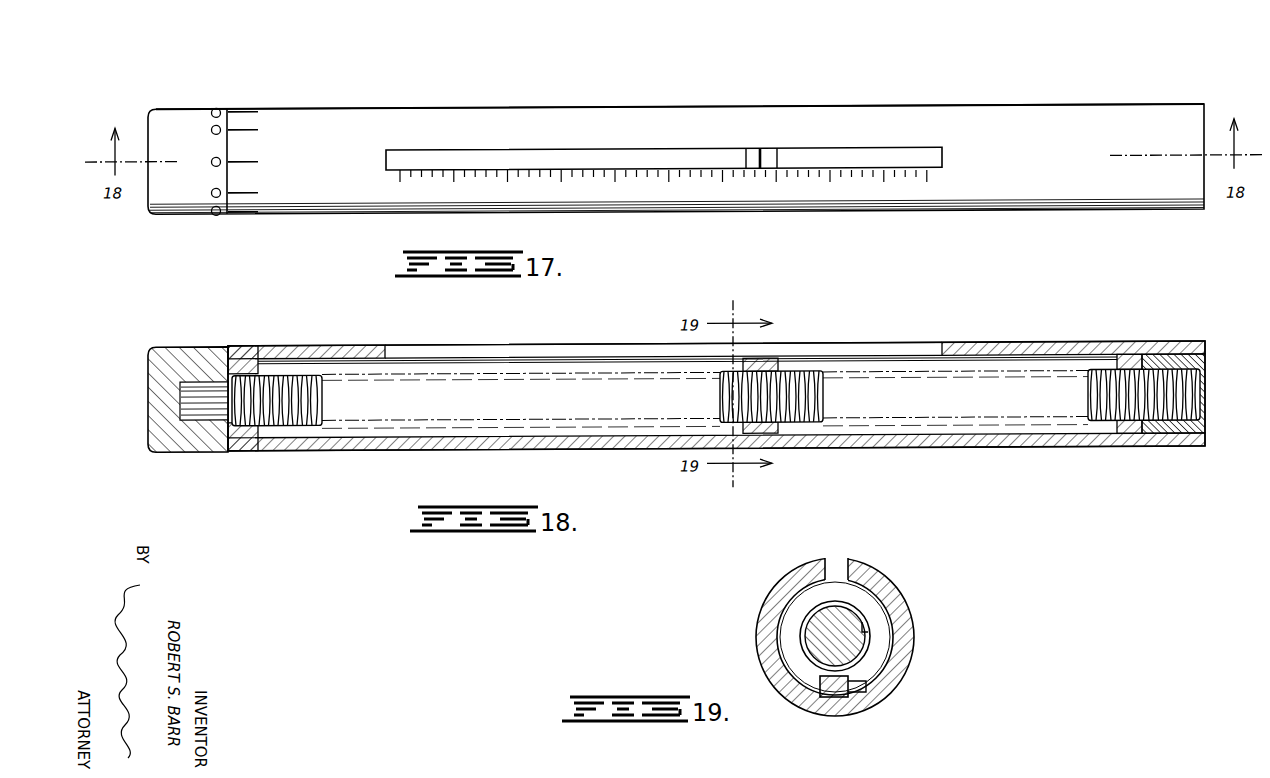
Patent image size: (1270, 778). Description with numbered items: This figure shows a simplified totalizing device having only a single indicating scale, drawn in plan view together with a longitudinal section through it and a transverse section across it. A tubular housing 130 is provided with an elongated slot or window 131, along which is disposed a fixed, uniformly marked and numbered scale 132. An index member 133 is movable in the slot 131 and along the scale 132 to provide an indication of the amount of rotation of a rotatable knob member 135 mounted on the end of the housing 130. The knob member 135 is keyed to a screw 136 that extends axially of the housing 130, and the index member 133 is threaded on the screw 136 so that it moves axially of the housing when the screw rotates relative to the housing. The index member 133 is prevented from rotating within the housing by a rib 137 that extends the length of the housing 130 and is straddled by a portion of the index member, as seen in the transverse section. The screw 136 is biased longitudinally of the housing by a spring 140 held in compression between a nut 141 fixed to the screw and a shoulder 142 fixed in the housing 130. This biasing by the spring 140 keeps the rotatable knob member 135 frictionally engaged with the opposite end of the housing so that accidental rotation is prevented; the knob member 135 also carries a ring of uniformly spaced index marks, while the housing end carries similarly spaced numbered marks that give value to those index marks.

In FIG. 17, the tubular housing 130 is at (582, 112).
In FIG. 18, the tubular housing 130 is at (1036, 348).
In FIG. 19, the tubular housing 130 is at (776, 589).
In FIG. 17, the elongated slot 131 is at (655, 156).
In FIG. 18, the elongated slot 131 is at (888, 356).
In FIG. 19, the elongated slot 131 is at (843, 563).
In FIG. 17, the scale 132 is at (933, 182).
In FIG. 17, the index member 133 is at (768, 154).
In FIG. 18, the index member 133 is at (778, 364).
In FIG. 19, the index member 133 is at (868, 605).
In FIG. 17, the rotatable knob member 135 is at (178, 119).
In FIG. 18, the screw 136 is at (285, 430).
In FIG. 19, the screw 136 is at (868, 632).
In FIG. 18, the rib 137 is at (810, 438).
In FIG. 19, the rib 137 is at (860, 684).
In FIG. 18, the spring 140 is at (1157, 362).
In FIG. 18, the nut 141 is at (1195, 367).
In FIG. 18, the shoulder 142 is at (1125, 360).